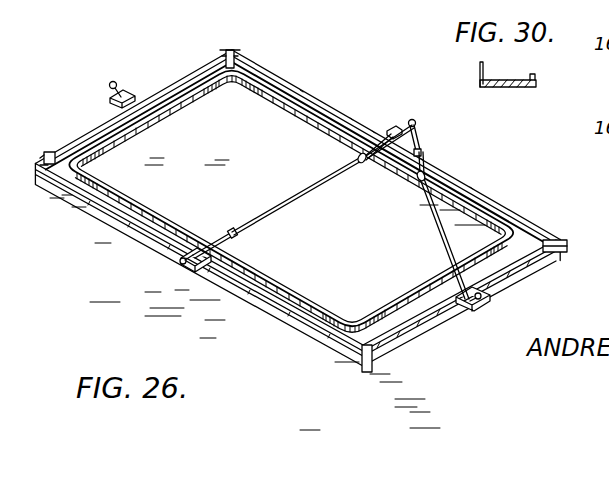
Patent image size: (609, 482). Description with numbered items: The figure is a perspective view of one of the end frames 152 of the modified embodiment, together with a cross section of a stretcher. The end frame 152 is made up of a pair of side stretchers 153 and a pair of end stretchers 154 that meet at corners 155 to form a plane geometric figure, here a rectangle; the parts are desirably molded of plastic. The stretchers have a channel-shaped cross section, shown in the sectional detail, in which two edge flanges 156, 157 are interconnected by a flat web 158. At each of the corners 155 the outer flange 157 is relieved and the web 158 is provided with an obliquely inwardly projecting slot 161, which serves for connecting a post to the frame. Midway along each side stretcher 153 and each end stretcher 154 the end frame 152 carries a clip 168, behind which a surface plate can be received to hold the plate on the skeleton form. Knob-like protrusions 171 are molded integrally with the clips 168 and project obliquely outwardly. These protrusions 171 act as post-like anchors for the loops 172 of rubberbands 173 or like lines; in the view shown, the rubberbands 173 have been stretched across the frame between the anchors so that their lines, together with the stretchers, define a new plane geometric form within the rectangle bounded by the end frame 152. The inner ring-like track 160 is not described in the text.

In FIG. 26, the end frame 152 is at (518, 171).
In FIG. 26, the side stretcher 153 is at (333, 112).
In FIG. 26, the end stretcher 154 is at (195, 70).
In FIG. 26, the corner 155 is at (238, 58).
In FIG. 30, the edge flange 156 is at (478, 71).
In FIG. 30, the outer edge flange 157 is at (536, 77).
In FIG. 30, the flat web 158 is at (517, 80).
In FIG. 26, the inner track ring 160 is at (291, 202).
In FIG. 26, the obliquely inwardly projecting slot 161 is at (564, 240).
In FIG. 26, the clip 168 is at (131, 96).
In FIG. 26, the knob-like protrusion 171 is at (111, 83).
In FIG. 26, the loop 172 is at (222, 244).
In FIG. 26, the rubberband 173 is at (306, 192).